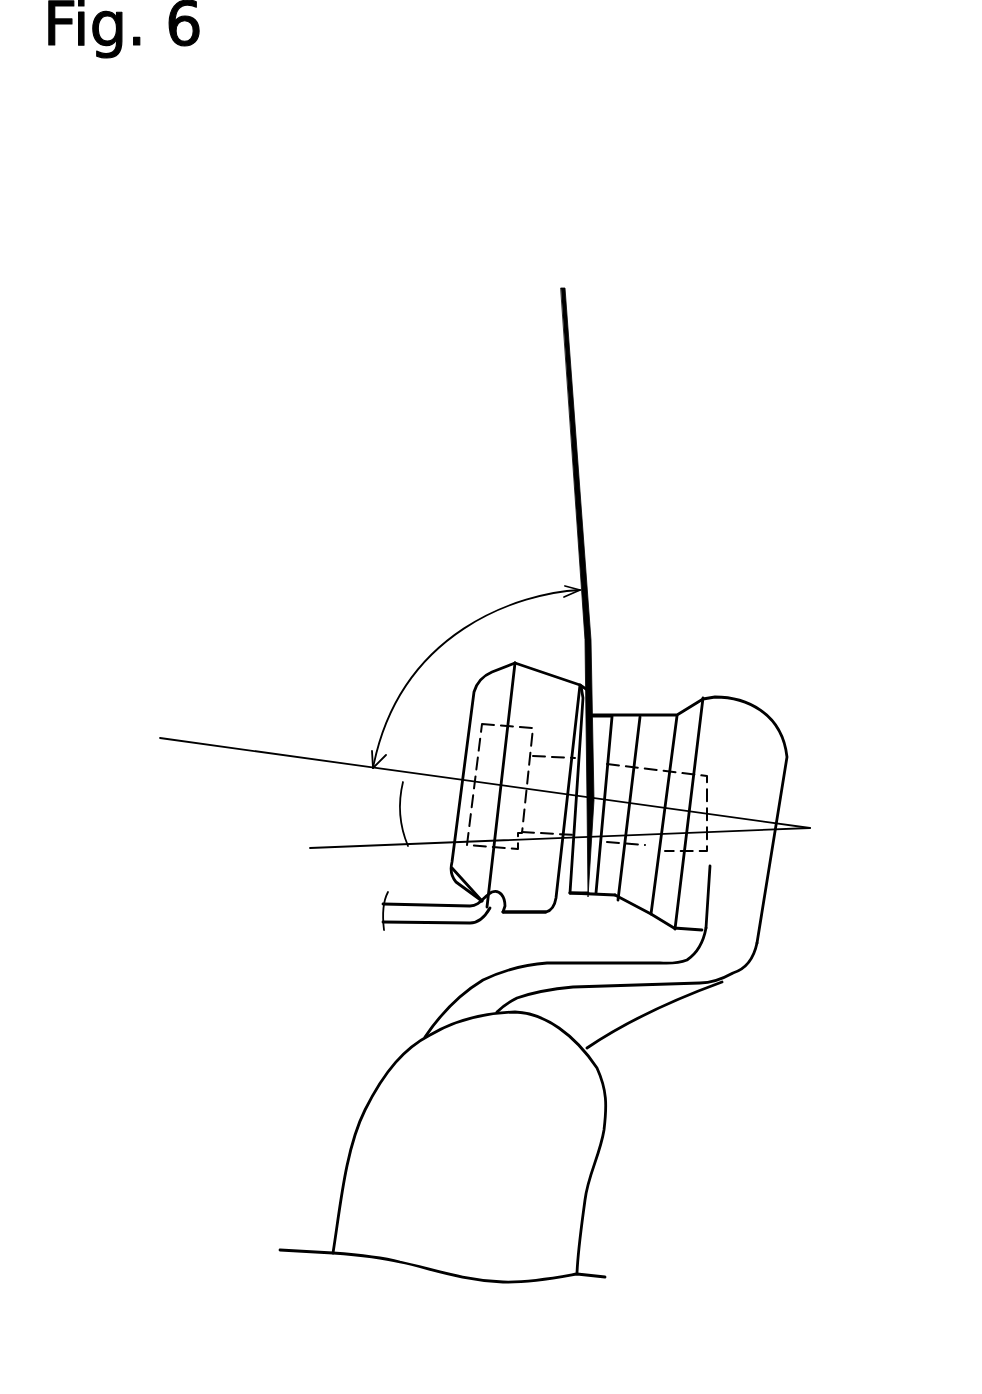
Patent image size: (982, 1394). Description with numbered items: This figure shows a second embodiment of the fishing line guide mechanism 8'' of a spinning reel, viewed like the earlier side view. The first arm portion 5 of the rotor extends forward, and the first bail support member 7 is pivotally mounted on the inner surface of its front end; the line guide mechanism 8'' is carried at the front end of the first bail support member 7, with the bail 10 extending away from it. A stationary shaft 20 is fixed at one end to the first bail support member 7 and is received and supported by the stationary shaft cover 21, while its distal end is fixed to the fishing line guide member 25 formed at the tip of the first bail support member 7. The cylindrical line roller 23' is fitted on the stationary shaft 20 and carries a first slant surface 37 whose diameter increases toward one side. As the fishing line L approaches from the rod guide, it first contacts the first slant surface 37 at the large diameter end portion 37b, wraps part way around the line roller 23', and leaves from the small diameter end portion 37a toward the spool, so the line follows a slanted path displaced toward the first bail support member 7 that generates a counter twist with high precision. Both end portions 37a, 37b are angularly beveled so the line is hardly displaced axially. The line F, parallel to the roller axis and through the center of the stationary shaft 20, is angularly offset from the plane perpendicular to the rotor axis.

The first arm portion 5 is at (586, 1177).
The first bail support member 7 is at (627, 1003).
The line guide mechanism 8'' is at (631, 697).
The bail 10 is at (381, 913).
The stationary shaft 20 is at (633, 845).
The stationary shaft cover 21 is at (468, 867).
The line roller 23' is at (670, 748).
The fishing line guide member 25 is at (747, 723).
The first slant surface 37 is at (600, 716).
The end portion 37a is at (612, 717).
The end portion 37b is at (547, 915).
The fishing line L is at (580, 503).
The line F is at (293, 760).